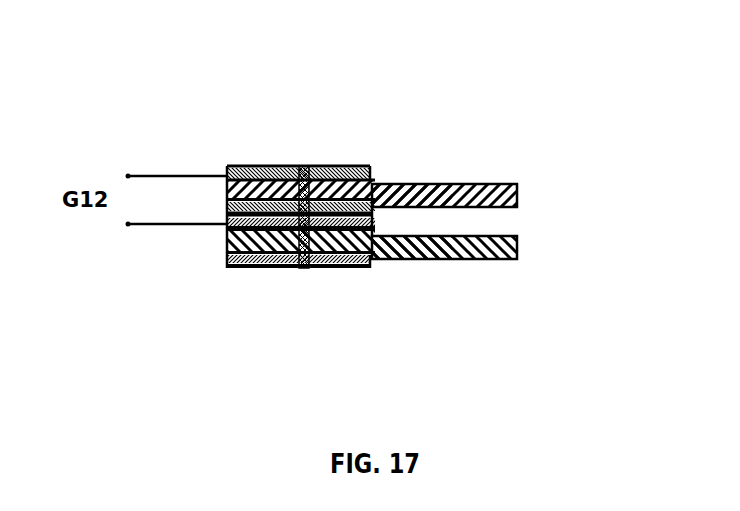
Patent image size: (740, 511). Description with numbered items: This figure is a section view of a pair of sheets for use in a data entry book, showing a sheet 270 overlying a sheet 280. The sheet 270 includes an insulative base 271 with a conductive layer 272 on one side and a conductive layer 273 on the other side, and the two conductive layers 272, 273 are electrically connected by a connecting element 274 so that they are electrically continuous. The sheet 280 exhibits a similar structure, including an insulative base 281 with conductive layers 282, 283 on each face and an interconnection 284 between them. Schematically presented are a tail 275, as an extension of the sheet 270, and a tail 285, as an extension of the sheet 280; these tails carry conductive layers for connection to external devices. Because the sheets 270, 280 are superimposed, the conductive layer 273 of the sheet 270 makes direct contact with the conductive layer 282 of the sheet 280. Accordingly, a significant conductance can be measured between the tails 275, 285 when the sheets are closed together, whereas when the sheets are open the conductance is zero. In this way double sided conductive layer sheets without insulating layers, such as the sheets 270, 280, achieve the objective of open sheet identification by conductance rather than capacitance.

The sheet 270 is at (217, 97).
The insulative base 271 is at (517, 194).
The conductive layer 272 is at (378, 178).
The conductive layer 273 is at (413, 184).
The connecting element 274 is at (311, 178).
The tail 275 is at (192, 176).
The sheet 280 is at (188, 328).
The insulative base 281 is at (517, 248).
The conductive layer 282 is at (400, 257).
The conductive layer 283 is at (373, 262).
The interconnection 284 is at (286, 268).
The tail 285 is at (200, 226).